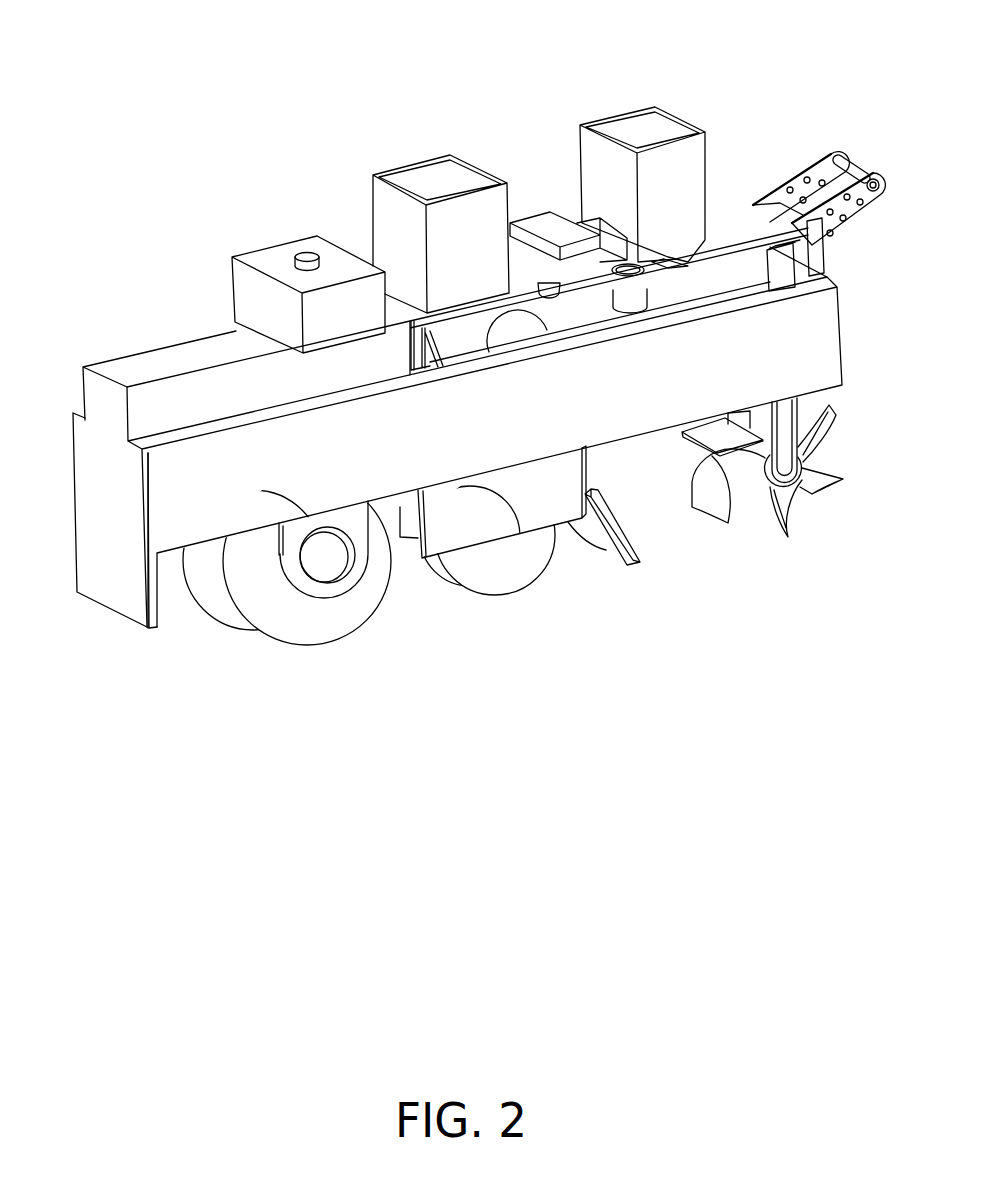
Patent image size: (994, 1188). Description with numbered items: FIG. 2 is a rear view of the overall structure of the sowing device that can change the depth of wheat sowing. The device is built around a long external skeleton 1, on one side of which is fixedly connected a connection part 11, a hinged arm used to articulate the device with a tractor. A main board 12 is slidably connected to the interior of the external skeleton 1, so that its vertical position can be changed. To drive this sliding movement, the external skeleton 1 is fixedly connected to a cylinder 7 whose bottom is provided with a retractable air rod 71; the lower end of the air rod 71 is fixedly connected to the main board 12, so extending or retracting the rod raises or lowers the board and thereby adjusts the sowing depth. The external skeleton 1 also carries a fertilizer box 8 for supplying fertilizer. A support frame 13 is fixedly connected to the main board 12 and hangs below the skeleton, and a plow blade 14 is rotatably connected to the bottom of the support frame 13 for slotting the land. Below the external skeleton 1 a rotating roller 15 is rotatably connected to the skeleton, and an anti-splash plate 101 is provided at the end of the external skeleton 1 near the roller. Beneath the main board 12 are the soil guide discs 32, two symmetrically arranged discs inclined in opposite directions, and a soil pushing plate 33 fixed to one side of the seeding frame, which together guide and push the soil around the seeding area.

The external skeleton 1 is at (185, 410).
The anti-splash plate 101 is at (123, 592).
The cylinder 7 is at (545, 217).
The fertilizer box 8 is at (668, 188).
The air rod 71 is at (551, 292).
The main board 12 is at (748, 243).
The connection part 11 is at (820, 160).
The support frame 13 is at (789, 410).
The plow blade 14 is at (782, 507).
The rotating roller 15 is at (328, 556).
The soil guide disc 32 is at (487, 574).
The soil pushing plate 33 is at (610, 543).